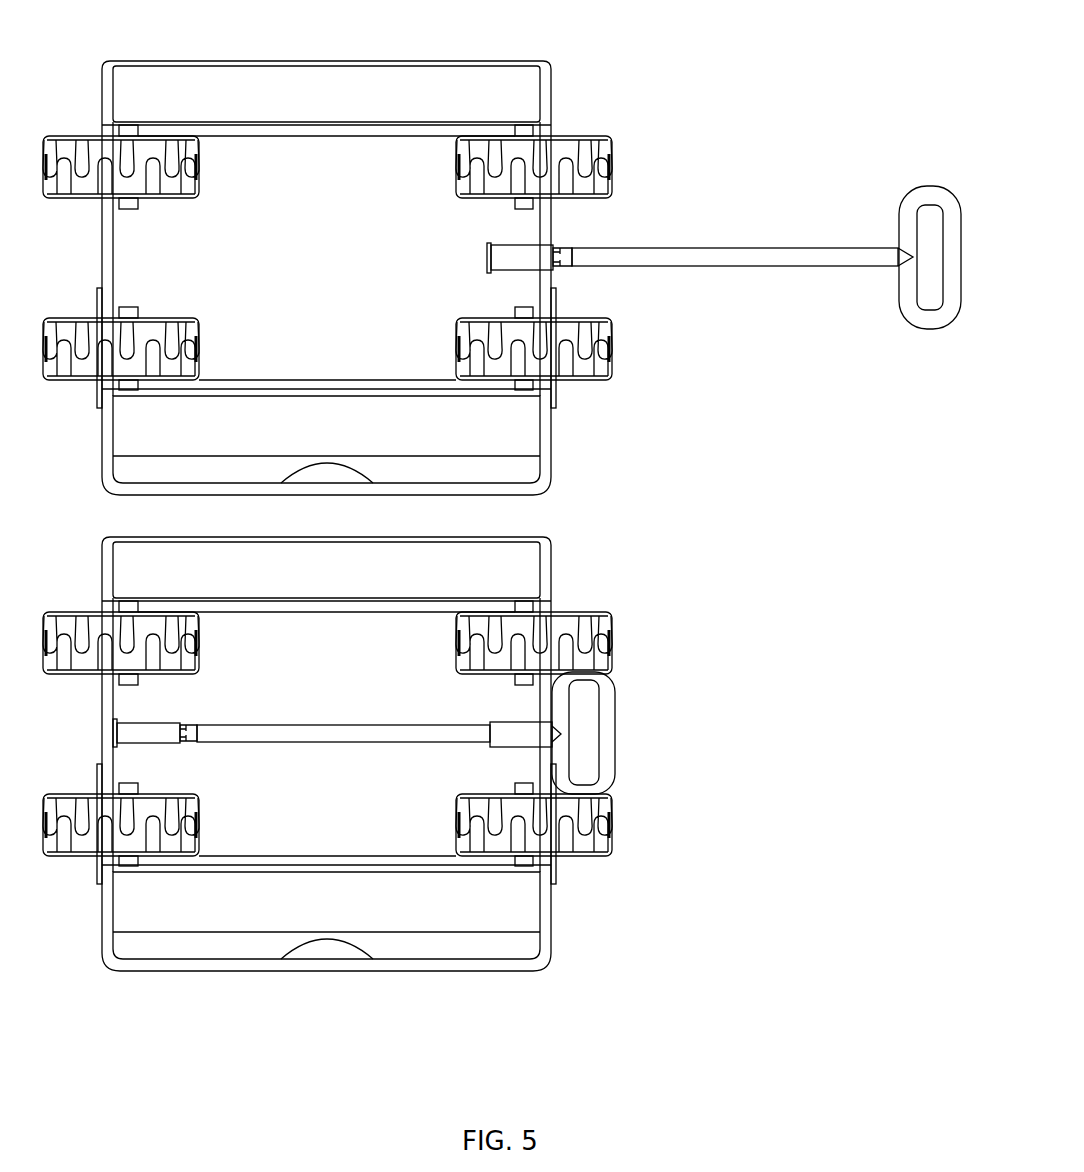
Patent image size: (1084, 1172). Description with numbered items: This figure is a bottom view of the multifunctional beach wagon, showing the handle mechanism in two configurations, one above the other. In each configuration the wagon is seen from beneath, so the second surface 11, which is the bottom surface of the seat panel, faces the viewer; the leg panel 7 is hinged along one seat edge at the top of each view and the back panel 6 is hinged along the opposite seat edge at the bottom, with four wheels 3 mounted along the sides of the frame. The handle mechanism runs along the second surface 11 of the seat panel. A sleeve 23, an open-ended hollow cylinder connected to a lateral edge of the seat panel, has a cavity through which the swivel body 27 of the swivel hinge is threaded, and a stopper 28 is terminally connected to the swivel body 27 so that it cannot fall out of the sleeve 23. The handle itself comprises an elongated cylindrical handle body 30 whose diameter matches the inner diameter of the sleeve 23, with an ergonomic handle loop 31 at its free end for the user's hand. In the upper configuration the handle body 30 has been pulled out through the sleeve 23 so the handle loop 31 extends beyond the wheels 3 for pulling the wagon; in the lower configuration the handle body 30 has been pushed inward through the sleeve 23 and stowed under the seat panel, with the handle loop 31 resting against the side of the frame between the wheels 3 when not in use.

The second surface 11 is at (357, 166).
The leg panel 7 is at (549, 72).
The back panel 6 is at (541, 453).
The wheels 3 is at (605, 148).
The stopper 28 is at (488, 246).
The sleeve 23 is at (545, 258).
The swivel body 27 is at (168, 733).
The handle body 30 is at (746, 259).
The handle loop 31 is at (913, 308).